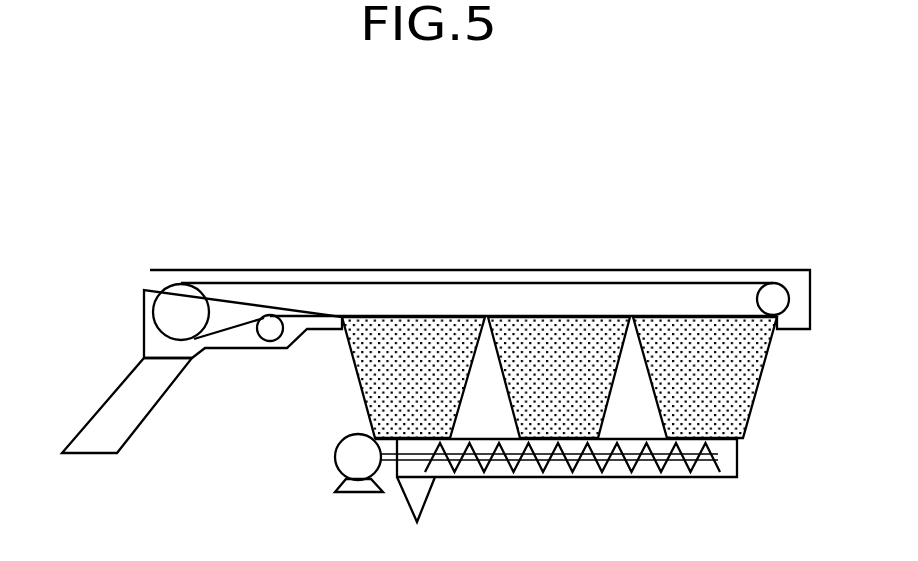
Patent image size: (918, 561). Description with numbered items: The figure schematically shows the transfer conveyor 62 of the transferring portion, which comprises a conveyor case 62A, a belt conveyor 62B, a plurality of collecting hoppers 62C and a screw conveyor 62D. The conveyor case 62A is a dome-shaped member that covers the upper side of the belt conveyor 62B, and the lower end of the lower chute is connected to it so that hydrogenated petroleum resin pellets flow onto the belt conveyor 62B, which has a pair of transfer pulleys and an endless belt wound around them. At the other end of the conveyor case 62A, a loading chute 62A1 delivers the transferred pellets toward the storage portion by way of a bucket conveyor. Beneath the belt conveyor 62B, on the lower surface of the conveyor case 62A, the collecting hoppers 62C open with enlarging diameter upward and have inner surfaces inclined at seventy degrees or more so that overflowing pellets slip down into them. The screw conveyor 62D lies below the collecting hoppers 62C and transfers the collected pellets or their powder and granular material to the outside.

The transfer conveyor 62 is at (170, 200).
The conveyor case 62A is at (143, 318).
The loading chute 62A1 is at (96, 408).
The belt conveyor 62B is at (582, 282).
The collecting hopper 62C is at (513, 414).
The screw conveyor 62D is at (557, 478).